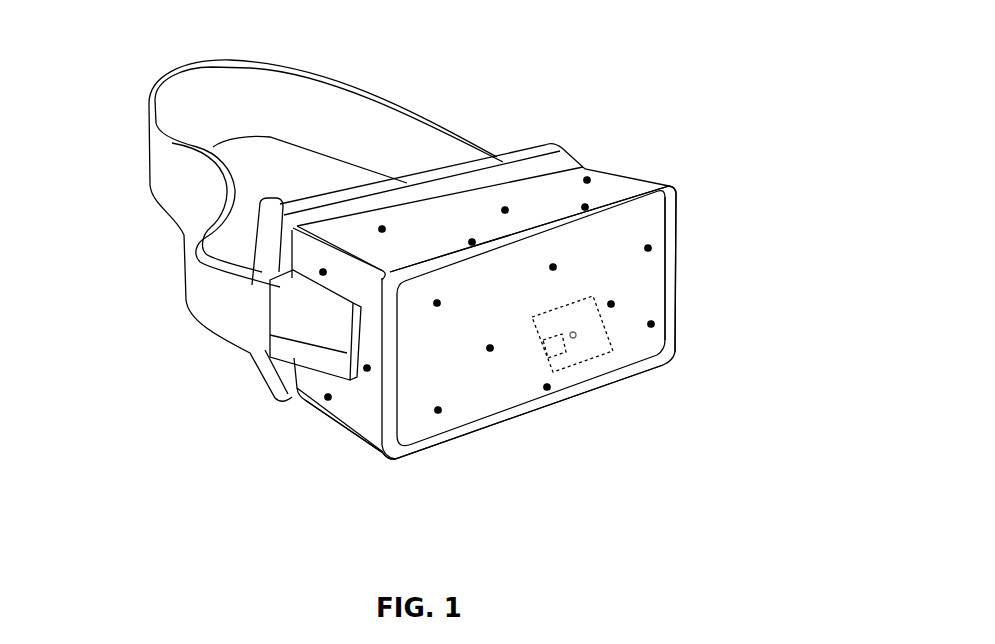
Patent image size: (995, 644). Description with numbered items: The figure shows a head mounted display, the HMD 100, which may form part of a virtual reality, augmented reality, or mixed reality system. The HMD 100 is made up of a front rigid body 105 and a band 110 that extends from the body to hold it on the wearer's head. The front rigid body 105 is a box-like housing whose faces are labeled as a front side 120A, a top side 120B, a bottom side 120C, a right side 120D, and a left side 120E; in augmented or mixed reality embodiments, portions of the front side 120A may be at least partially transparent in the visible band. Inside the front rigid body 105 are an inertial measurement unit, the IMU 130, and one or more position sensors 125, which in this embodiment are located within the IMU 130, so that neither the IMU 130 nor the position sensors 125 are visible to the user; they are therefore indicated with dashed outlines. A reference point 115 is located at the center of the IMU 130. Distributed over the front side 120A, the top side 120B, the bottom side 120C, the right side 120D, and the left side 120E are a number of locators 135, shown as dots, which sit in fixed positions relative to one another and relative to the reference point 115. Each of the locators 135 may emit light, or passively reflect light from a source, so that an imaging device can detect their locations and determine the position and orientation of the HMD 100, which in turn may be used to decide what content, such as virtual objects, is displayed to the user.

The head mounted display (HMD) 100 is at (70, 62).
The front rigid body 105 is at (675, 192).
The band 110 is at (420, 118).
The reference point 115 is at (580, 355).
The front side 120A is at (420, 428).
The top side 120B is at (345, 231).
The bottom side 120C is at (316, 446).
The right side 120D is at (355, 413).
The left side 120E is at (657, 171).
The position sensors 125 is at (545, 364).
The inertial measurement unit (IMU) 130 is at (630, 356).
The locators 135 is at (672, 310).